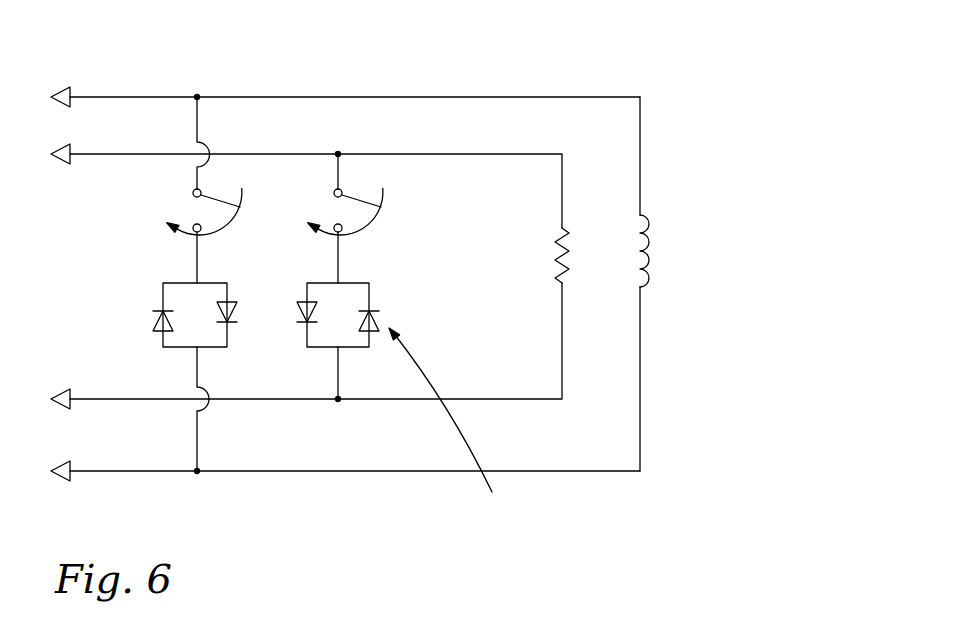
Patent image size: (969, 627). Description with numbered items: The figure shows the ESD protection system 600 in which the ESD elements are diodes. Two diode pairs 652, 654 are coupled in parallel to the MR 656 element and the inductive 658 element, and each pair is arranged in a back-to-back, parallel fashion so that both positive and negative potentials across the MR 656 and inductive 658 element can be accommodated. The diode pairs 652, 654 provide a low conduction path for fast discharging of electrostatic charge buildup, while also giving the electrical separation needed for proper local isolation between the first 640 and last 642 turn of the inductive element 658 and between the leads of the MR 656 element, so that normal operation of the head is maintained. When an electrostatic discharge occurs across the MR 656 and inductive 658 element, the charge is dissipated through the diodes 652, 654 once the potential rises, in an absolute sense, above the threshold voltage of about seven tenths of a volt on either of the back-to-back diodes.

The ESD protection system 600 is at (505, 58).
The first turn 640 is at (375, 471).
The last turn 642 is at (350, 97).
The diode pair 652 is at (145, 345).
The diode pair 654 is at (297, 345).
The MR element 656 is at (562, 237).
The inductive element 658 is at (650, 210).